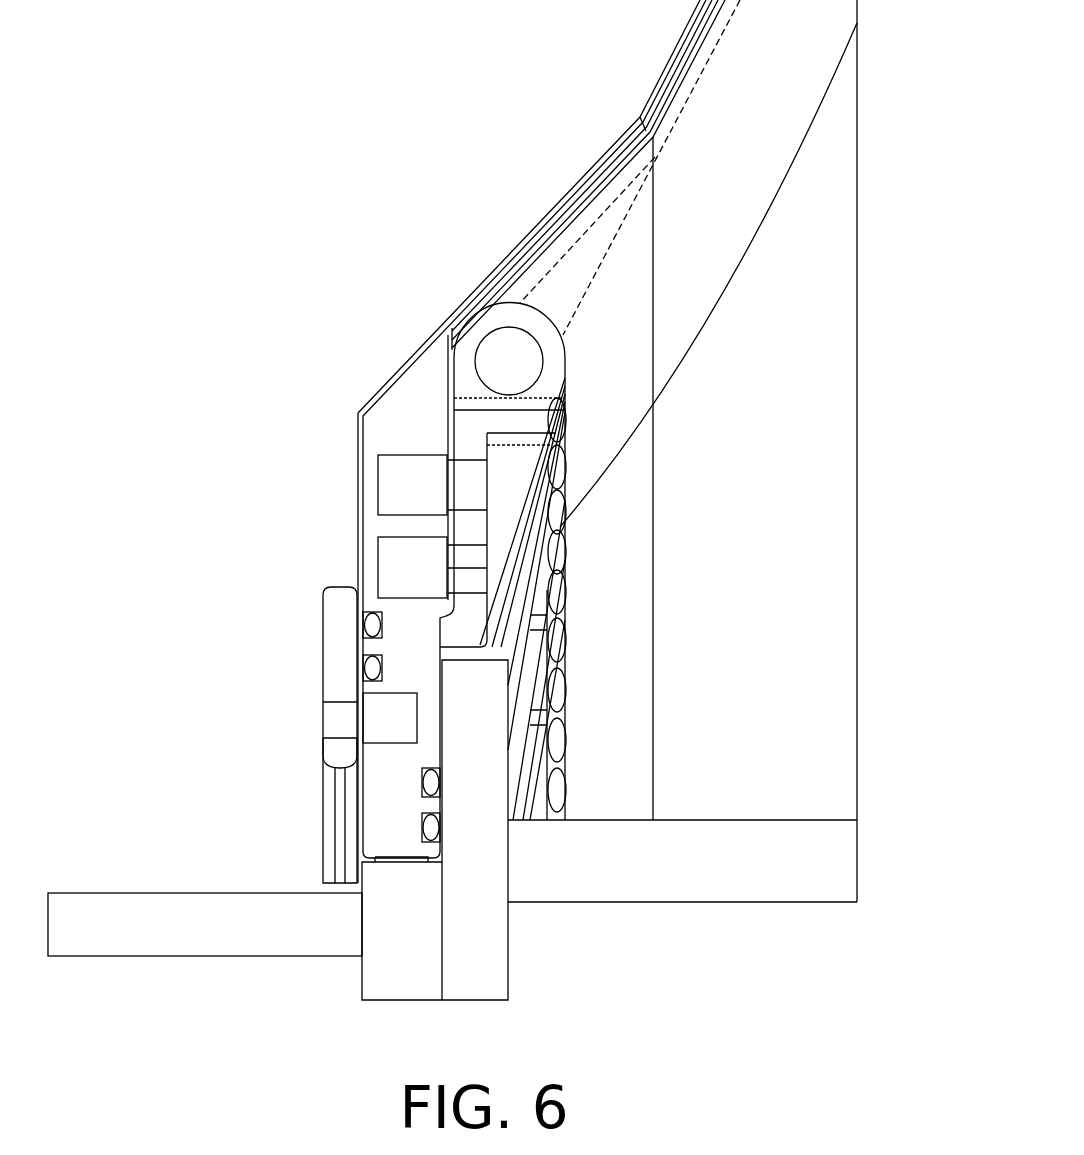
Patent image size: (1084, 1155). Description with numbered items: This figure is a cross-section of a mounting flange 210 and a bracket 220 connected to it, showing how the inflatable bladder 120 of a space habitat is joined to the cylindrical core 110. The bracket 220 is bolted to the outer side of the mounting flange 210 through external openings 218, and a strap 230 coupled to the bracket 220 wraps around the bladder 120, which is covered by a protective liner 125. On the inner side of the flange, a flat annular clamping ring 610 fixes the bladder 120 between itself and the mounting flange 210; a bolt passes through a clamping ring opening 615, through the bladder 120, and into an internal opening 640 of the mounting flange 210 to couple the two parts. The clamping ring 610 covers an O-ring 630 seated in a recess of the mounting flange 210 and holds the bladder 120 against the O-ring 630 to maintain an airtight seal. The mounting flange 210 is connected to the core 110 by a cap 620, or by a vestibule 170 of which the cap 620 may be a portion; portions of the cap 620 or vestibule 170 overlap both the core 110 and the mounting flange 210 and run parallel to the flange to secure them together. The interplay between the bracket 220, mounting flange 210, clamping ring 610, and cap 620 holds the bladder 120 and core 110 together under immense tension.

The core 110 is at (133, 912).
The bladder 120 is at (440, 332).
The liner 125 is at (560, 210).
The vestibule 170 is at (835, 865).
The mounting flange 210 is at (372, 440).
The external openings 218 is at (397, 557).
The bracket 220 is at (563, 377).
The strap 230 is at (672, 125).
The clamping ring 610 is at (338, 625).
The clamping ring opening 615 is at (335, 718).
The cap 620 is at (485, 912).
The O-ring 630 is at (372, 623).
The internal opening 640 is at (388, 718).